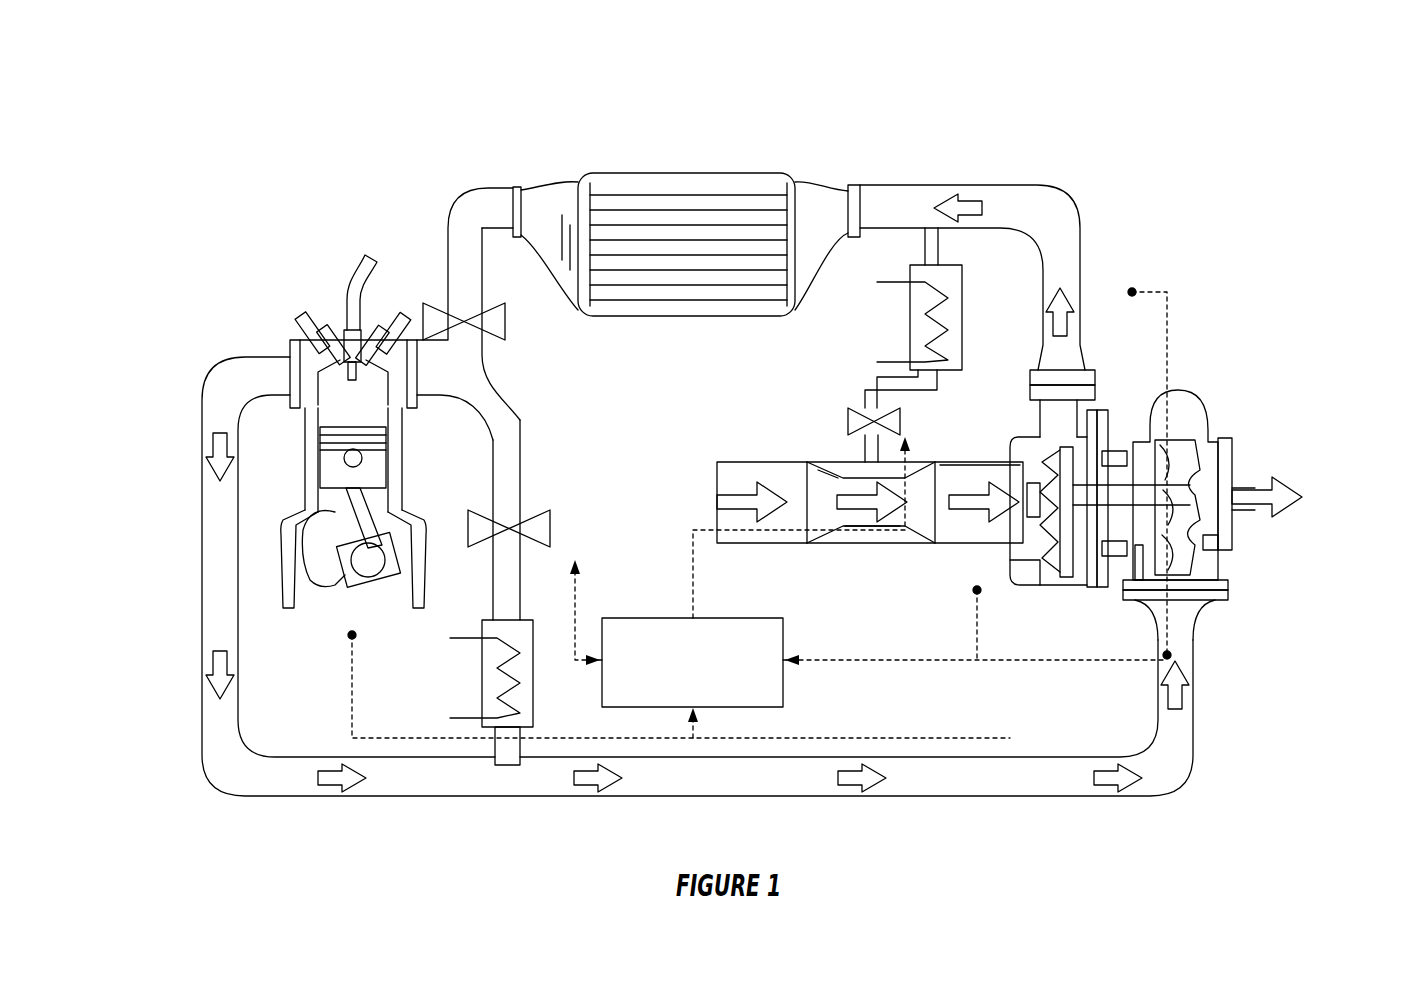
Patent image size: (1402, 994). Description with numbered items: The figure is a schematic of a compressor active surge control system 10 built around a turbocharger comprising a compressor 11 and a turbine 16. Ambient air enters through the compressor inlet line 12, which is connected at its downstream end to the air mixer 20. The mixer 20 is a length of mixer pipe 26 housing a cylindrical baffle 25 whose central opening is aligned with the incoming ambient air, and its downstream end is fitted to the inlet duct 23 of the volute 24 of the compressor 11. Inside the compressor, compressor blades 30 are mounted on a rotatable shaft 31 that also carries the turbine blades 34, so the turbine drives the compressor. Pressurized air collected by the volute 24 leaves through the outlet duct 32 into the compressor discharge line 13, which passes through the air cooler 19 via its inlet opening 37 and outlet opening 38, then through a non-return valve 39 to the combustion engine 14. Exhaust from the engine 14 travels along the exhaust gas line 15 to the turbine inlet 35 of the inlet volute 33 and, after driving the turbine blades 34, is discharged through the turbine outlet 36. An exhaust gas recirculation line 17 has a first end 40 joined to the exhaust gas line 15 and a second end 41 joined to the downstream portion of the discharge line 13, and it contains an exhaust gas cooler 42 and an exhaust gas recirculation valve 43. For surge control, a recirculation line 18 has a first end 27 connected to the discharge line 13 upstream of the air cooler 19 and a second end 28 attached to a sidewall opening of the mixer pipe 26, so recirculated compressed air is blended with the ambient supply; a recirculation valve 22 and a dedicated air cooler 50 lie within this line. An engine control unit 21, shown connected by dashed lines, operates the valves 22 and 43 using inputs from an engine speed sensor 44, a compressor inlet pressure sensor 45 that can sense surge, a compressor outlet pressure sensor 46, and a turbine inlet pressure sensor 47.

The compressor active surge control system 10 is at (1208, 160).
The compressor 11 is at (1100, 414).
The compressor inlet line 12 is at (836, 505).
The compressor discharge line 13 is at (1104, 266).
The combustion engine 14 is at (298, 306).
The exhaust gas line 15 is at (200, 545).
The turbine 16 is at (1231, 492).
The exhaust gas recirculation line 17 is at (520, 455).
The recirculation line 18 is at (850, 378).
The air cooler 19 is at (780, 175).
The air mixer 20 is at (882, 545).
The engine control unit 21 is at (692, 663).
The recirculation valve 22 is at (845, 412).
The inlet duct 23 is at (963, 462).
The volute 24 is at (1060, 572).
The cylindrical baffle 25 is at (833, 470).
The mixer pipe 26 is at (822, 545).
The first end of recirculation line 27 is at (935, 232).
The second end of recirculation line 28 is at (870, 462).
The compressor blades 30 is at (1035, 557).
The rotatable shaft 31 is at (1112, 505).
The outlet duct 32 is at (1045, 410).
The inlet volute 33 is at (1180, 392).
The turbine blades 34 is at (1172, 480).
The turbine inlet 35 is at (1230, 592).
The turbine outlet 36 is at (1268, 512).
The inlet opening 37 is at (862, 192).
The outlet opening 38 is at (520, 190).
The non-return valve 39 is at (490, 335).
The first end of exhaust gas recirculation line 40 is at (508, 766).
The second end of exhaust gas recirculation line 41 is at (480, 378).
The exhaust gas cooler 42 is at (530, 690).
The exhaust gas recirculation valve 43 is at (540, 530).
The engine speed sensor 44 is at (356, 635).
The compressor inlet pressure sensor 45 is at (973, 590).
The compressor outlet pressure sensor 46 is at (1136, 292).
The turbine inlet pressure sensor 47 is at (1170, 655).
The air cooler 50 is at (960, 325).